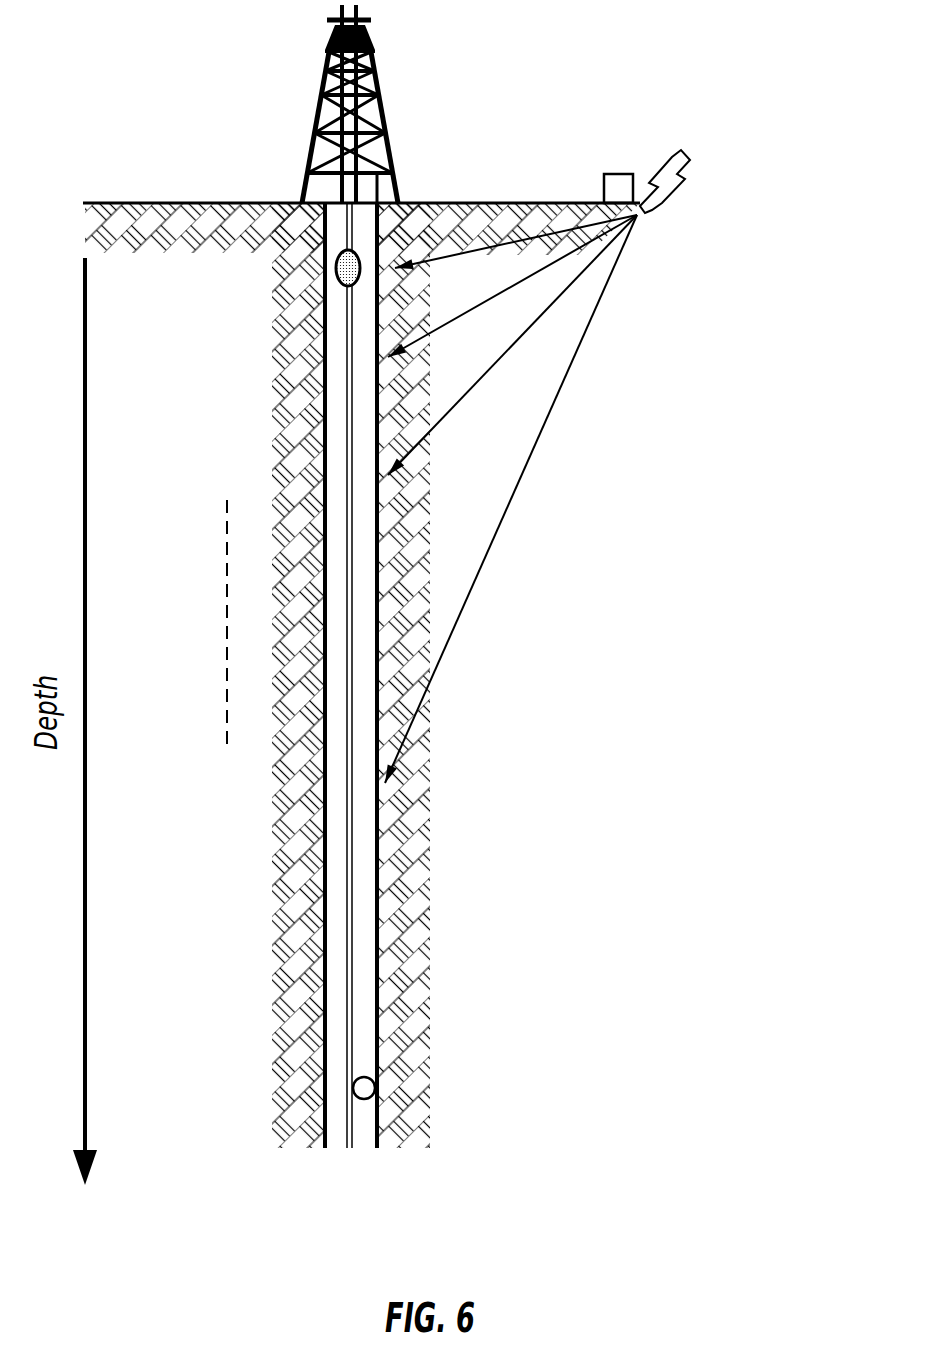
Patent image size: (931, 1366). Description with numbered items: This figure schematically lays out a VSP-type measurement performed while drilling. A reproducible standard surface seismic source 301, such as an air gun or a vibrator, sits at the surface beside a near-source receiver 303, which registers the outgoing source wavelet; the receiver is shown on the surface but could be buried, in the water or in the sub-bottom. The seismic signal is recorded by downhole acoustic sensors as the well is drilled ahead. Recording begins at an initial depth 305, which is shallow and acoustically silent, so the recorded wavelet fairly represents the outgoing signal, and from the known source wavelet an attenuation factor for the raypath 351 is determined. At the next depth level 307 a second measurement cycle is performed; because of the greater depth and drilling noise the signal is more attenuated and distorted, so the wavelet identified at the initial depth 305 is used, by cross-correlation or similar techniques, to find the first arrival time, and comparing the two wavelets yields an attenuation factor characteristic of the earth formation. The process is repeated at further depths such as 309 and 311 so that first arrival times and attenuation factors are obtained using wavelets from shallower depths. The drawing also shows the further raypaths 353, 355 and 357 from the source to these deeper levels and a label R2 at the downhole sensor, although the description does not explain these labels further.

The surface seismic source 301 is at (684, 153).
The near-source receiver 303 is at (619, 173).
The initial depth 305 is at (321, 268).
The downhole receiver R2 is at (337, 283).
The next depth level 307 is at (320, 358).
The other depth 309 is at (320, 493).
The other depth 311 is at (320, 804).
The raypath 351 is at (516, 257).
The second ray path 353 is at (512, 302).
The third ray path 355 is at (512, 362).
The fourth ray path 357 is at (511, 499).